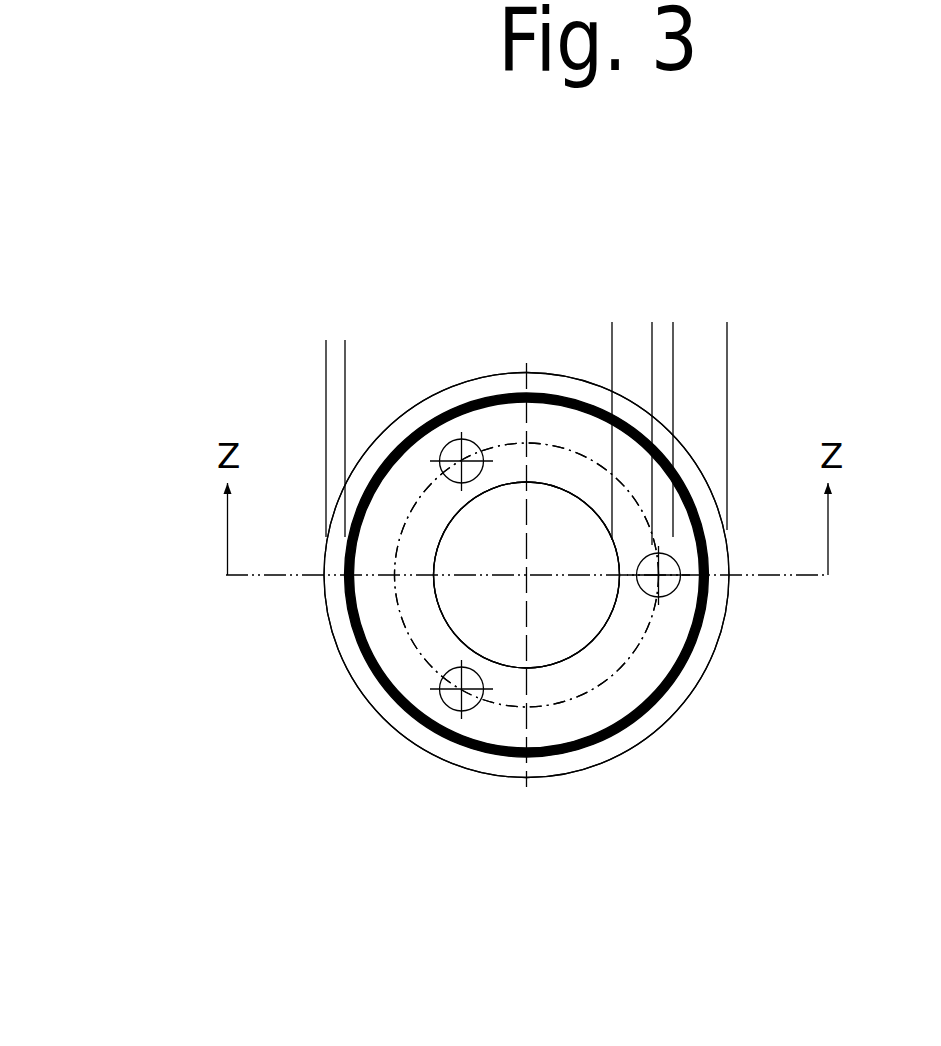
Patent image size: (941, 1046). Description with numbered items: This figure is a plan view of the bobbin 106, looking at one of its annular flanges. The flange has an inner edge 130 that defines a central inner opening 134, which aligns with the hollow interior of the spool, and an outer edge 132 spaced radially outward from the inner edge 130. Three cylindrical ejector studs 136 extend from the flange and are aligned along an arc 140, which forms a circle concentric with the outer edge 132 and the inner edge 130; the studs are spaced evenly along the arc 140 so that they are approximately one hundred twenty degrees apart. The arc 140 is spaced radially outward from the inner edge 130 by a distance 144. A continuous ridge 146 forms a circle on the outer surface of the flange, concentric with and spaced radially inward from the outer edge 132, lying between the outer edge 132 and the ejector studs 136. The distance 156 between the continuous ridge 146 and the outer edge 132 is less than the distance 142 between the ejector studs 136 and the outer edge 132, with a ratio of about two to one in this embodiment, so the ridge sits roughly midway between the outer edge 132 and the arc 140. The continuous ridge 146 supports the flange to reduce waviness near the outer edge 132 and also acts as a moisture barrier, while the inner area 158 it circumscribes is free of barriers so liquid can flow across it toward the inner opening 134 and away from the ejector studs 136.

The bobbin 106 is at (240, 418).
The inner edge 130 is at (588, 647).
The outer edge 132 is at (583, 768).
The inner opening 134 is at (498, 627).
The ejector studs 136 is at (443, 447).
The arc 140 is at (412, 645).
The distance 142 is at (673, 358).
The distance 144 is at (652, 358).
The continuous ridge 146 is at (672, 687).
The distance 156 is at (366, 402).
The inner area 158 is at (422, 604).